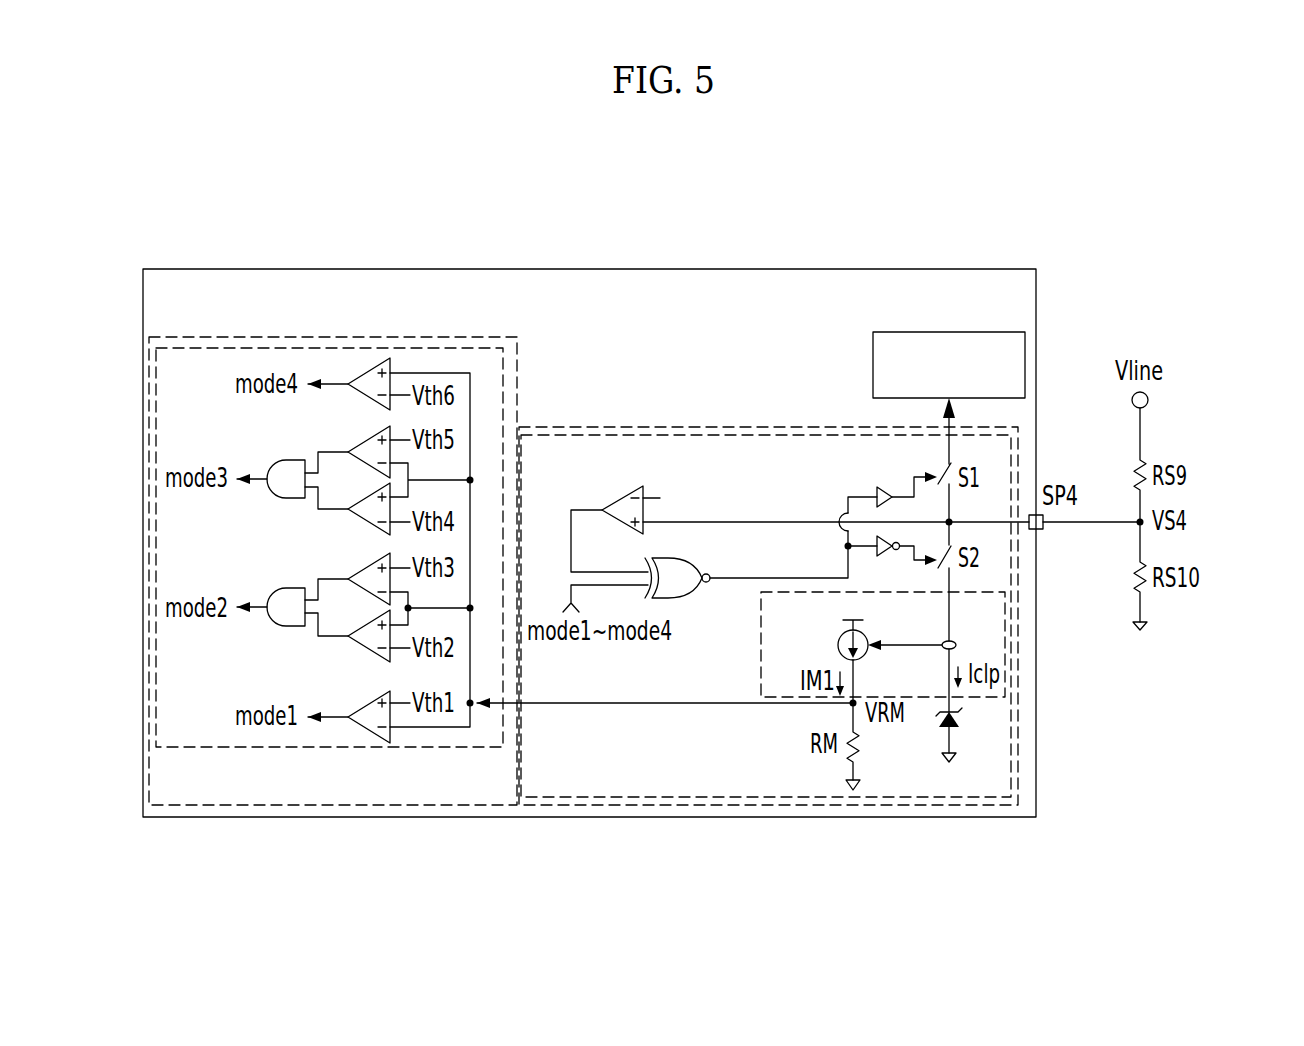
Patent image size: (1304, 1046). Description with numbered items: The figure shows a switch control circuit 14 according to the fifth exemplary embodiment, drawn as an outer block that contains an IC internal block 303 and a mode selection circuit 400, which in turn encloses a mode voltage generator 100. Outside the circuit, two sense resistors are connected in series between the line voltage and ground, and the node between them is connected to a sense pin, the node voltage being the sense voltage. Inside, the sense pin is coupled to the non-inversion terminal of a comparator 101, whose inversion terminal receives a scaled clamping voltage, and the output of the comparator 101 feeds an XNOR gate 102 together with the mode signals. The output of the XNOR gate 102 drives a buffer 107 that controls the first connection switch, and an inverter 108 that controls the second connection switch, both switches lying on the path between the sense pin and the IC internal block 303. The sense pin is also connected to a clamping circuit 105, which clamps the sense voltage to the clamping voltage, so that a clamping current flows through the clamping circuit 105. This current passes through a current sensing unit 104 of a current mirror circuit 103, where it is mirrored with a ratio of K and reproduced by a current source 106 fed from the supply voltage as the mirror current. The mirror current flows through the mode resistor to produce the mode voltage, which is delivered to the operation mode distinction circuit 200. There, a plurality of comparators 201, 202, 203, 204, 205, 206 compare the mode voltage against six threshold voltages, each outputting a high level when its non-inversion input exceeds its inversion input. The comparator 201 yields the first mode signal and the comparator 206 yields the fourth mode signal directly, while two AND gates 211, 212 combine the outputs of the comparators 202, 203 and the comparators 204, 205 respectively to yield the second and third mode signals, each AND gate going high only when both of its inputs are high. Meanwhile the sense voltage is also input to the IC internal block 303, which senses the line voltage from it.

The switch control circuit 14 is at (837, 269).
The mode voltage generator 100 is at (518, 771).
The comparator 101 is at (624, 495).
The XNOR gate 102 is at (688, 560).
The current mirror circuit 103 is at (760, 640).
The current sensing unit 104 is at (952, 641).
The clamping circuit 105 is at (952, 732).
The current source 106 is at (838, 643).
The buffer 107 is at (875, 486).
The inverter 108 is at (846, 550).
The operation mode distinction circuit 200 is at (330, 748).
The comparator 201 is at (363, 708).
The comparator 202 is at (365, 646).
The comparator 203 is at (365, 568).
The comparator 204 is at (365, 520).
The comparator 205 is at (362, 441).
The comparator 206 is at (365, 395).
The AND gate 211 is at (276, 624).
The AND gate 212 is at (276, 496).
The IC internal block 303 is at (968, 332).
The mode selection circuit 400 is at (698, 427).